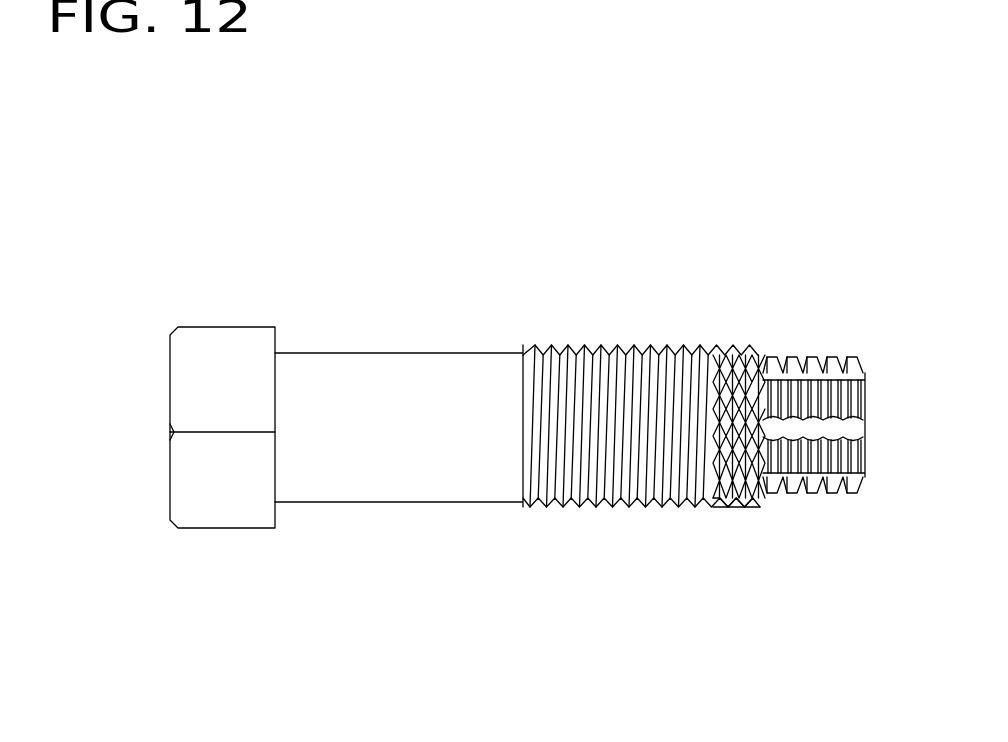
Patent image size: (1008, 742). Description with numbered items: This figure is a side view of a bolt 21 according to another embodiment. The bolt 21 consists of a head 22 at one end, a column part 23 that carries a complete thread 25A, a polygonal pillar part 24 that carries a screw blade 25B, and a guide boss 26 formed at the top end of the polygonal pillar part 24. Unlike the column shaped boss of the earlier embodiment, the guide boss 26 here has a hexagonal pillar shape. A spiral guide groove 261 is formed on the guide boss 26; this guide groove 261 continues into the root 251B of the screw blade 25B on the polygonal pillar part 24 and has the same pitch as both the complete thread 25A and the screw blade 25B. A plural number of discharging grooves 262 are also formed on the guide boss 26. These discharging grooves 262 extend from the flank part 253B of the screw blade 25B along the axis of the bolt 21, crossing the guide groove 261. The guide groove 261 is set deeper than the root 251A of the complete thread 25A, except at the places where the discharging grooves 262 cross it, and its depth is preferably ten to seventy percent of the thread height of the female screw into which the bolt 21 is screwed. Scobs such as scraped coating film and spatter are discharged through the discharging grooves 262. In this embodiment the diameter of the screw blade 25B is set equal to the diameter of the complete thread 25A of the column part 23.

The bolt 21 is at (533, 258).
The head 22 is at (212, 327).
The column part 23 is at (383, 493).
The polygonal pillar part 24 is at (731, 515).
The complete thread 25A is at (713, 338).
The screw blade 25B is at (773, 338).
The root of the complete thread 251A is at (617, 506).
The root of the screw blade 251B is at (747, 508).
The flank part of the screw blade 253B is at (720, 427).
The guide boss 26 is at (832, 342).
The guide groove 261 is at (807, 357).
The discharging groove 262 is at (866, 376).